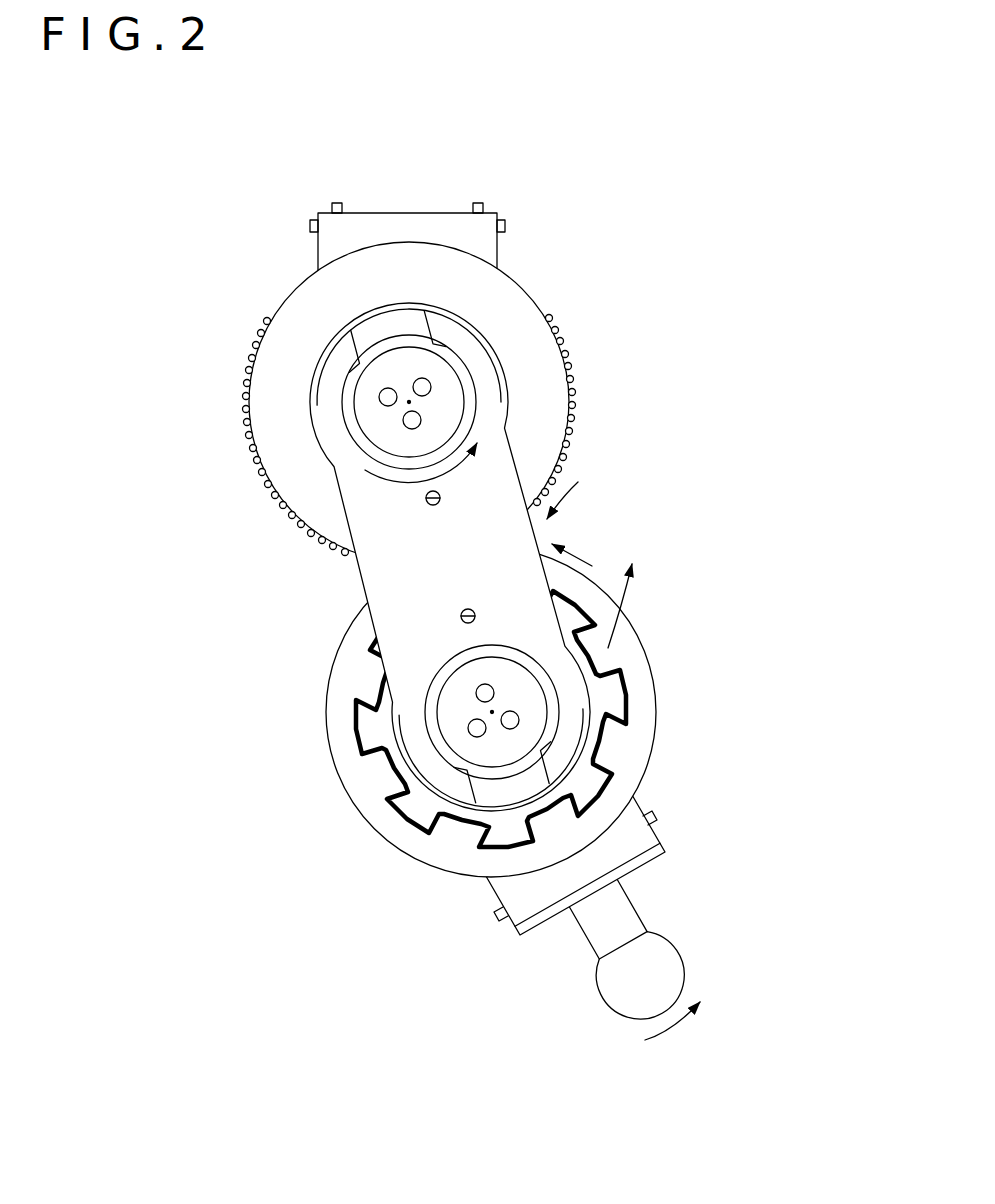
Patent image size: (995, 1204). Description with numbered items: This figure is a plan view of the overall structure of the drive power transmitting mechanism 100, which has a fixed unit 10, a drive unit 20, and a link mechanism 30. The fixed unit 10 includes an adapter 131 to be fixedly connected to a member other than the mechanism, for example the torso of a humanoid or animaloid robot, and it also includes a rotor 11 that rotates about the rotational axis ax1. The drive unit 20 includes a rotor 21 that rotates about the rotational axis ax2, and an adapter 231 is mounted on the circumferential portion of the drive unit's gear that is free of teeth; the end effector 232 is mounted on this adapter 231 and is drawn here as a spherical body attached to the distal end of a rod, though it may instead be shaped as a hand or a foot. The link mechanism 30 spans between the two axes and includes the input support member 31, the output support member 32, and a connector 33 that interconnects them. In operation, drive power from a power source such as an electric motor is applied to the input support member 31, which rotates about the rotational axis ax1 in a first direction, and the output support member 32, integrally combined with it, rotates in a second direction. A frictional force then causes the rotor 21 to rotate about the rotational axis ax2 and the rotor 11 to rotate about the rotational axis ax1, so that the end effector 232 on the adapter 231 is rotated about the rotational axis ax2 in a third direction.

The drive power transmitting mechanism 100 is at (682, 265).
The fixed unit 10 is at (415, 392).
The rotor 11 is at (290, 297).
The adapter 131 is at (368, 211).
The drive unit 20 is at (520, 750).
The rotor 21 is at (430, 872).
The adapter 231 is at (650, 798).
The end effector 232 is at (687, 960).
The link mechanism 30 is at (421, 557).
The input support member 31 is at (366, 416).
The output support member 32 is at (457, 734).
The connector 33 is at (383, 580).
The rotational axis ax1 is at (407, 400).
The rotational axis ax2 is at (490, 714).